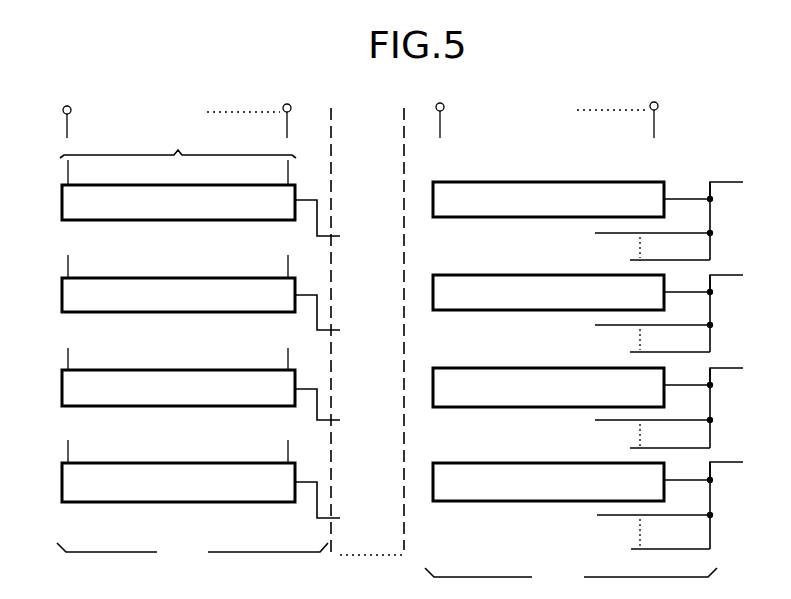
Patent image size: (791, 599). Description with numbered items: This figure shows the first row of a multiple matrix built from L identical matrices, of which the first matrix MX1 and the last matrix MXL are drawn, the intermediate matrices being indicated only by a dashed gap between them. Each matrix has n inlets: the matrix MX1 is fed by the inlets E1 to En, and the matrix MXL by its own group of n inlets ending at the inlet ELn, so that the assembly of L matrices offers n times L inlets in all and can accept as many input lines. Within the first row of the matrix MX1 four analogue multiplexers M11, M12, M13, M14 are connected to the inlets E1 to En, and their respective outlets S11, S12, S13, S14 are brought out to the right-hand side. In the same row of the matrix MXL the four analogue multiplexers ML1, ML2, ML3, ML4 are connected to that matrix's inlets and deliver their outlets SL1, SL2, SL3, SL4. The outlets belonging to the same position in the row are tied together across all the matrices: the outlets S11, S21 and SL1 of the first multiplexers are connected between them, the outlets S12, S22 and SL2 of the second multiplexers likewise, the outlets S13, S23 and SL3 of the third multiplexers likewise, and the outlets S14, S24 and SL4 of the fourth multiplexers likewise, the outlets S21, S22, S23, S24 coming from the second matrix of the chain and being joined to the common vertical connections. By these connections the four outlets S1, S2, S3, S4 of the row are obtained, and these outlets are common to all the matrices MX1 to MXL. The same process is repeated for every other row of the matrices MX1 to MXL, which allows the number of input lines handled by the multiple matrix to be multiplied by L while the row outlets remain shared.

The L-th matrix MXL is at (192, 334).
The first matrix MX1 is at (571, 577).
The last inlet of the L-th matrix ELn is at (72, 109).
The n-th inlet En is at (440, 109).
The first inlet E1 is at (623, 109).
The number of inlets per matrix n is at (178, 142).
The fourth analogue multiplexer of the L-th matrix ML4 is at (166, 199).
The third analogue multiplexer of the L-th matrix ML3 is at (238, 289).
The second analogue multiplexer of the L-th matrix ML2 is at (240, 379).
The first analogue multiplexer of the L-th matrix ML1 is at (240, 473).
The fourth analogue multiplexer of the first matrix M14 is at (512, 194).
The third analogue multiplexer of the first matrix M13 is at (514, 284).
The second analogue multiplexer of the first matrix M12 is at (514, 379).
The first analogue multiplexer of the first matrix M11 is at (512, 474).
The outlet of multiplexer ML4 SL4 is at (502, 237).
The outlet of multiplexer ML3 SL3 is at (502, 331).
The outlet of multiplexer ML2 SL2 is at (502, 426).
The outlet of multiplexer ML1 SL1 is at (502, 523).
The outlet of multiplexer M14 S14 is at (703, 187).
The outlet of multiplexer M13 S13 is at (703, 281).
The outlet of multiplexer M12 S12 is at (703, 375).
The outlet of multiplexer M11 S11 is at (703, 470).
The outlet of multiplexer M24 S24 is at (629, 237).
The outlet of multiplexer M23 S23 is at (629, 329).
The outlet of multiplexer M22 S22 is at (629, 424).
The outlet of multiplexer M21 S21 is at (630, 517).
The fourth row outlet S4 is at (741, 214).
The third row outlet S3 is at (741, 308).
The second row outlet S2 is at (741, 404).
The first row outlet S1 is at (741, 500).